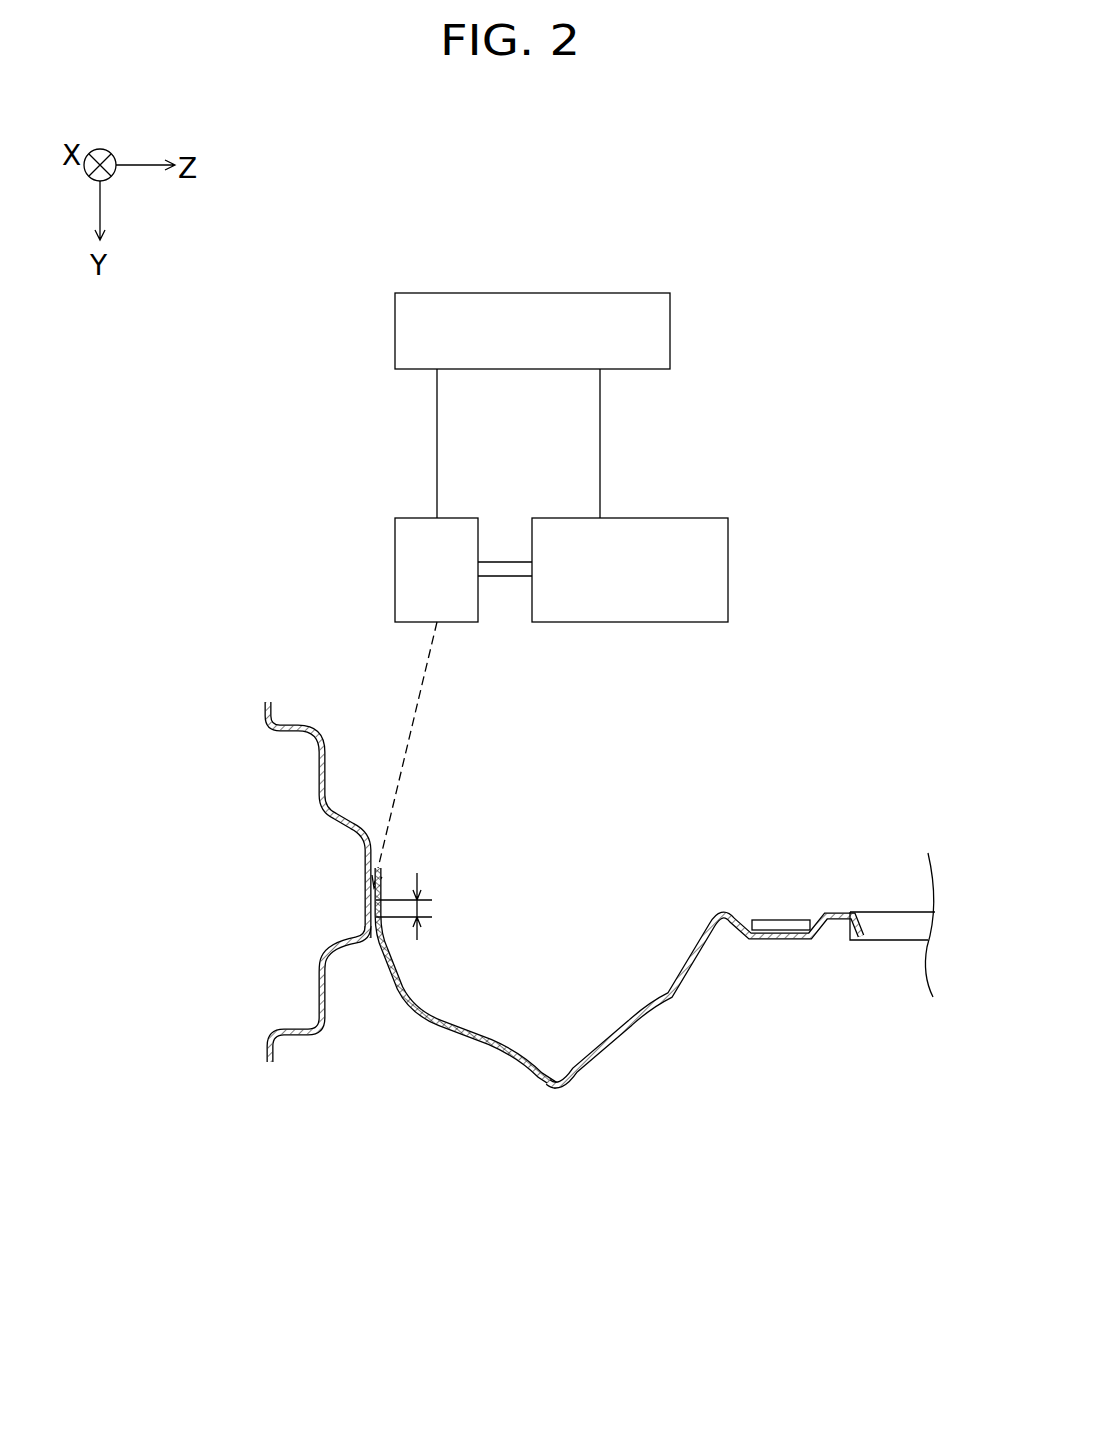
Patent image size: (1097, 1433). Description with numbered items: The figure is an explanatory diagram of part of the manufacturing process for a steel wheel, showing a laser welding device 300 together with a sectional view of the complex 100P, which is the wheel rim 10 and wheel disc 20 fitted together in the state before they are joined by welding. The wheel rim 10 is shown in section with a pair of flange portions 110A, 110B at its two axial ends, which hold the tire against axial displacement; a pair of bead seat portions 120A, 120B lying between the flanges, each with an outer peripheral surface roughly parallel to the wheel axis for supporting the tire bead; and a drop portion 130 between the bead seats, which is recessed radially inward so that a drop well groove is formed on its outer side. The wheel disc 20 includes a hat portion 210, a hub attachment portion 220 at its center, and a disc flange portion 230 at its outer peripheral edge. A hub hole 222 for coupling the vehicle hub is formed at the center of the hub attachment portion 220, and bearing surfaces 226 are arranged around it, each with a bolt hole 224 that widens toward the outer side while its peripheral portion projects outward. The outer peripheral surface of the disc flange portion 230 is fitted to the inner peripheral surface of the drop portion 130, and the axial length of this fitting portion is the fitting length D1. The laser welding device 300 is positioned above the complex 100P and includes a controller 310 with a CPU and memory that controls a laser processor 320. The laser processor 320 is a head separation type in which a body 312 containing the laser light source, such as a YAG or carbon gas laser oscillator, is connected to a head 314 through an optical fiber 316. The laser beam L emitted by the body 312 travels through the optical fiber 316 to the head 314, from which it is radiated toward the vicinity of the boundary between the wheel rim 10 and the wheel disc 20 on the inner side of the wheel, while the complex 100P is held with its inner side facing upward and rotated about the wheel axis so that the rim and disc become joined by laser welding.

The wheel rim 10 is at (283, 1090).
The wheel disc 20 is at (452, 1053).
The complex 100P is at (417, 1273).
The flange portion 110A is at (258, 1068).
The flange portion 110B is at (262, 710).
The bead seat portion 120A is at (318, 1000).
The bead seat portion 120B is at (318, 768).
The drop portion 130 is at (366, 850).
The hat portion 210 is at (447, 1018).
The hub attachment portion 220 is at (822, 910).
The hub hole 222 is at (885, 922).
The bolt hole 224 is at (768, 943).
The bearing surface 226 is at (813, 943).
The disc flange portion 230 is at (366, 917).
The laser welding device 300 is at (356, 287).
The controller 310 is at (522, 295).
The body 312 is at (627, 622).
The head 314 is at (460, 622).
The optical fiber 316 is at (512, 578).
The laser processor 320 is at (705, 768).
The laser beam L is at (415, 707).
The fitting length D1 is at (420, 905).